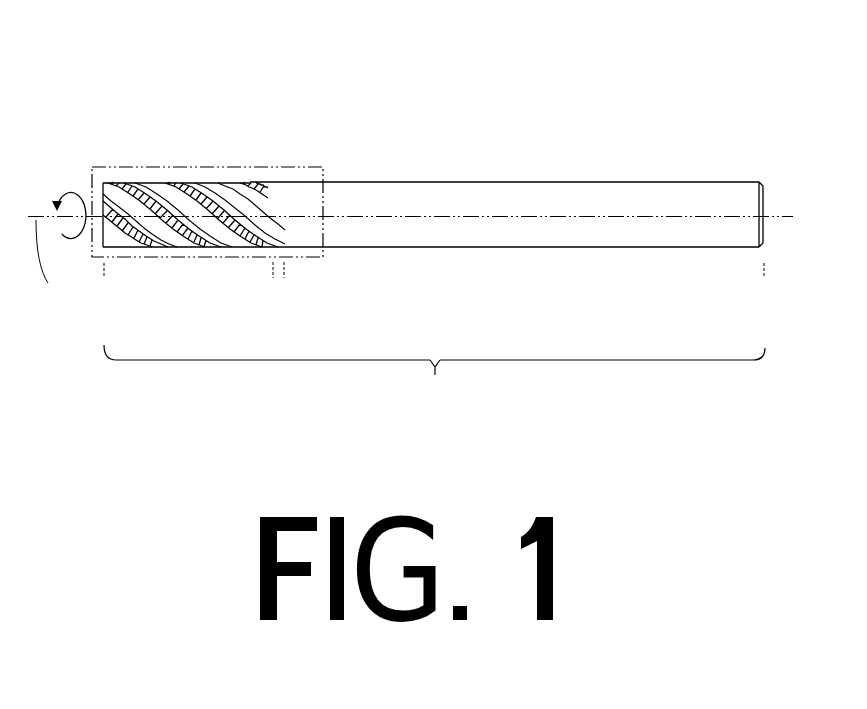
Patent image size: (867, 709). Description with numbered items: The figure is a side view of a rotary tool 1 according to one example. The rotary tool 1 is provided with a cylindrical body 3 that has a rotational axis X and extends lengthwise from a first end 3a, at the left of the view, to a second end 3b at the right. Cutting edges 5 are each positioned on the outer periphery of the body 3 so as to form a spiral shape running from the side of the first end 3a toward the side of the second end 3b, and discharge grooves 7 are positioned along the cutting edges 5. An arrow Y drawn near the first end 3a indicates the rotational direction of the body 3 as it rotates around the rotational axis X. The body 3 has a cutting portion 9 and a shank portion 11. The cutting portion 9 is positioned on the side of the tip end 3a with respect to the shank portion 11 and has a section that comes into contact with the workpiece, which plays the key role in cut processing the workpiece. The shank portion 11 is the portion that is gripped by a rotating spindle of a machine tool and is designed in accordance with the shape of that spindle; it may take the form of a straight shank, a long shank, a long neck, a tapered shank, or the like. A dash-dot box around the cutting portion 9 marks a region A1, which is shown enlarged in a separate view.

The rotary tool 1 is at (452, 150).
The body 3 is at (434, 380).
The first end 3a is at (103, 203).
The second end 3b is at (763, 196).
The cutting edges 5 is at (138, 183).
The discharge grooves 7 is at (177, 197).
The cutting portion 9 is at (186, 278).
The shank portion 11 is at (521, 278).
The region A1 is at (212, 167).
The rotational axis X is at (51, 267).
The arrow Y is at (66, 201).